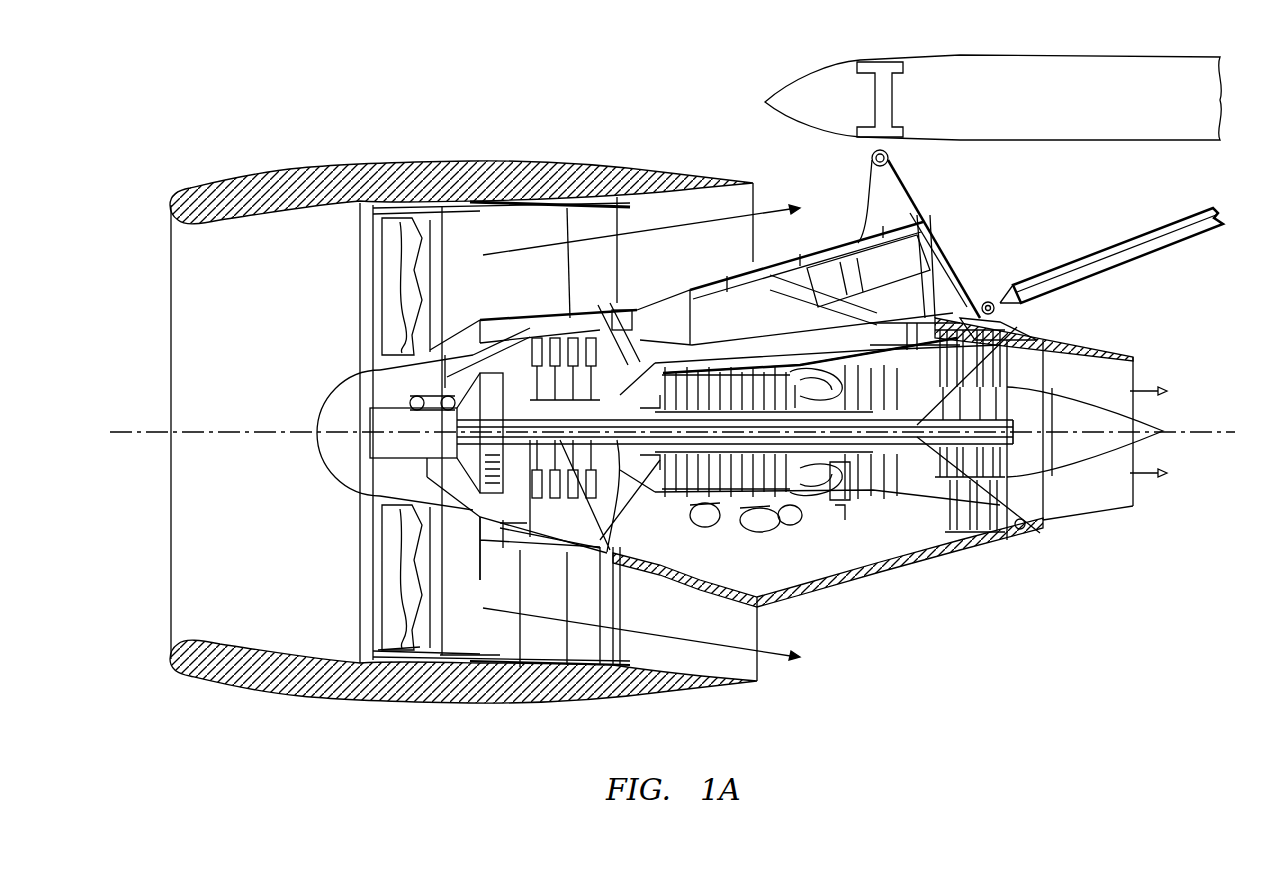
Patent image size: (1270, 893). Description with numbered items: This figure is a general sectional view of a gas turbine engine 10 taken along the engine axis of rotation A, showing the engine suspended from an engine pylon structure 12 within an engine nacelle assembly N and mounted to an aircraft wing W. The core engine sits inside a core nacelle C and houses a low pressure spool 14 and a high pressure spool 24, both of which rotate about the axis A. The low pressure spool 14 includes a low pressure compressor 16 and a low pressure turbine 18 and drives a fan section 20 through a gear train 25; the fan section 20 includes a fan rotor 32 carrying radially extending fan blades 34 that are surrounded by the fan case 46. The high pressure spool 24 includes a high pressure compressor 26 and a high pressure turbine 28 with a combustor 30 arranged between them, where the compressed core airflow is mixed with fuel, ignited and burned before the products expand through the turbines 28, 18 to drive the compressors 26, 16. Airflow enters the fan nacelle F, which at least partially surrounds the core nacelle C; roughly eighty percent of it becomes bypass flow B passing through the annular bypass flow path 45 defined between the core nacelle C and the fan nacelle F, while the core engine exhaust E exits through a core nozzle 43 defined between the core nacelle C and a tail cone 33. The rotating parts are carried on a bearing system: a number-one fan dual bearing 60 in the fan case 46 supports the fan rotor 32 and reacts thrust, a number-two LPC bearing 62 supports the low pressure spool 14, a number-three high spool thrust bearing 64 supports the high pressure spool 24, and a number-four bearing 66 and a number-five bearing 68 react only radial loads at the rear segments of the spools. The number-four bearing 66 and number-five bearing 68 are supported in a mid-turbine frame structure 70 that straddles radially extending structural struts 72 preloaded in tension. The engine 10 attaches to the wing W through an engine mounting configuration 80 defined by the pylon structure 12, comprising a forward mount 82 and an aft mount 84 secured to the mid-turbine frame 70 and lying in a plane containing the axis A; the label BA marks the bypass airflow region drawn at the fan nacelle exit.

The gas turbine engine 10 is at (435, 88).
The engine pylon structure 12 is at (937, 258).
The low pressure spool 14 is at (657, 478).
The low pressure compressor 16 is at (562, 340).
The low pressure turbine 18 is at (990, 305).
The fan section 20 is at (400, 232).
The high pressure spool 24 is at (840, 465).
The gear train 25 is at (485, 540).
The high pressure compressor 26 is at (736, 362).
The high pressure turbine 28 is at (887, 322).
The combustor 30 is at (807, 345).
The fan rotor 32 is at (347, 505).
The tail cone 33 is at (1172, 418).
The fan blades 34 is at (385, 575).
The core nozzle 43 is at (1128, 508).
The bypass flow path 45 is at (497, 294).
The fan case 46 is at (460, 655).
The #1 fan dual bearing 60 is at (450, 400).
The #2 LPC bearing 62 is at (620, 573).
The #3 high spool thrust bearing 64 is at (655, 472).
The #4 bearing 66 is at (1022, 527).
The #5 bearing 68 is at (1040, 333).
The mid-turbine frame structure 70 is at (965, 540).
The structural struts 72 is at (1023, 325).
The engine mounting configuration 80 is at (828, 193).
The forward mount 82 is at (634, 312).
The aft mount 84 is at (947, 313).
The fan nacelle F is at (243, 188).
The engine nacelle assembly N is at (615, 155).
The bypass airflow BA is at (690, 196).
The bypass flow B is at (773, 211).
The aircraft wing W is at (977, 80).
The core engine exhaust E is at (1150, 386).
The engine axis of rotation A is at (1187, 436).
The core nacelle C is at (840, 588).